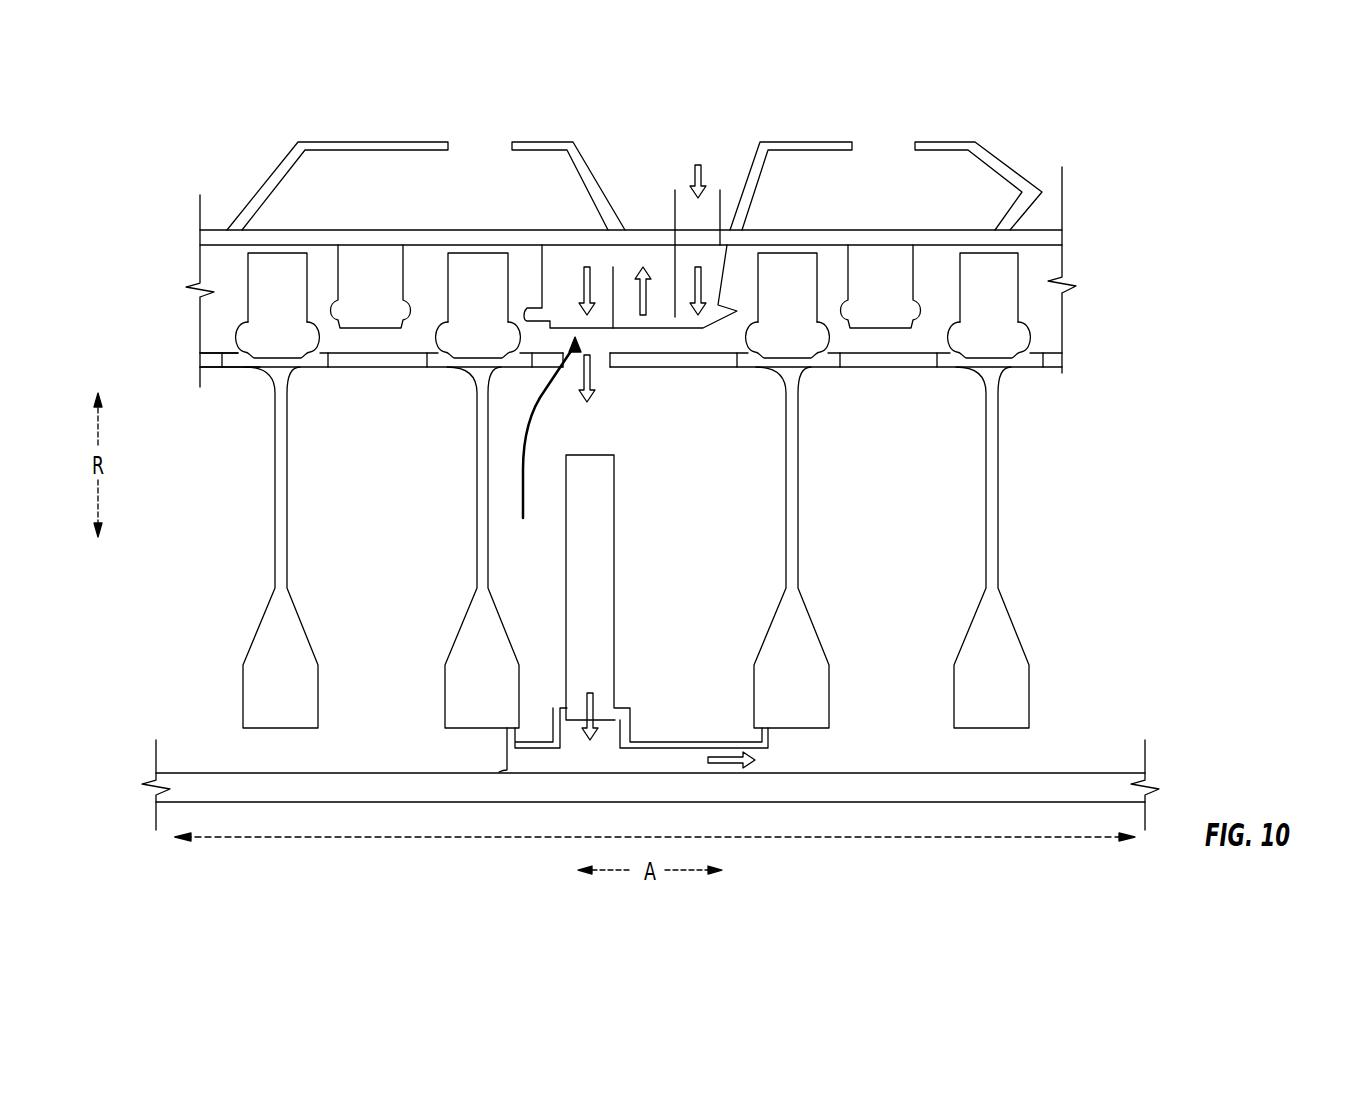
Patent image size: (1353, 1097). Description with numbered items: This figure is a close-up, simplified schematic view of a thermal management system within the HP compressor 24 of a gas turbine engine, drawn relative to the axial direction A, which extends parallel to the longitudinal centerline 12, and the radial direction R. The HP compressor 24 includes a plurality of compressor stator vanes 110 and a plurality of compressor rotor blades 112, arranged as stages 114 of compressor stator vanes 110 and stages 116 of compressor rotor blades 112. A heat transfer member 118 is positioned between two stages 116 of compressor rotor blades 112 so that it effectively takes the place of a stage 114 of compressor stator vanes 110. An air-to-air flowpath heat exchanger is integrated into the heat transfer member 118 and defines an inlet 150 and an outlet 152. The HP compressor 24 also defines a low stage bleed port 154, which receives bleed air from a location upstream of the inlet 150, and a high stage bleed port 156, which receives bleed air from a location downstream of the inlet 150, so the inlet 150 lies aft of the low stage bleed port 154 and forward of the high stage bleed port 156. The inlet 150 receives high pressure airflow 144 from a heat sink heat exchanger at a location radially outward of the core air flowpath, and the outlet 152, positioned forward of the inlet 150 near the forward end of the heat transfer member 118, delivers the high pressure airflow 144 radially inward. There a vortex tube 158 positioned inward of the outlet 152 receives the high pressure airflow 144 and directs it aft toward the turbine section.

The HP compressor 24 is at (508, 86).
The longitudinal centerline 12 is at (1022, 840).
The compressor stator vanes 110 is at (363, 285).
The compressor rotor blades 112 is at (275, 280).
The stages of compressor stator vanes 114 is at (384, 258).
The stages of compressor rotor blades 116 is at (234, 277).
The heat transfer member 118 is at (556, 268).
The high pressure airflow 144 is at (706, 175).
The inlet 150 is at (694, 213).
The outlet 152 is at (544, 443).
The low stage bleed port 154 is at (495, 203).
The high stage bleed port 156 is at (898, 203).
The vortex tube 158 is at (603, 540).